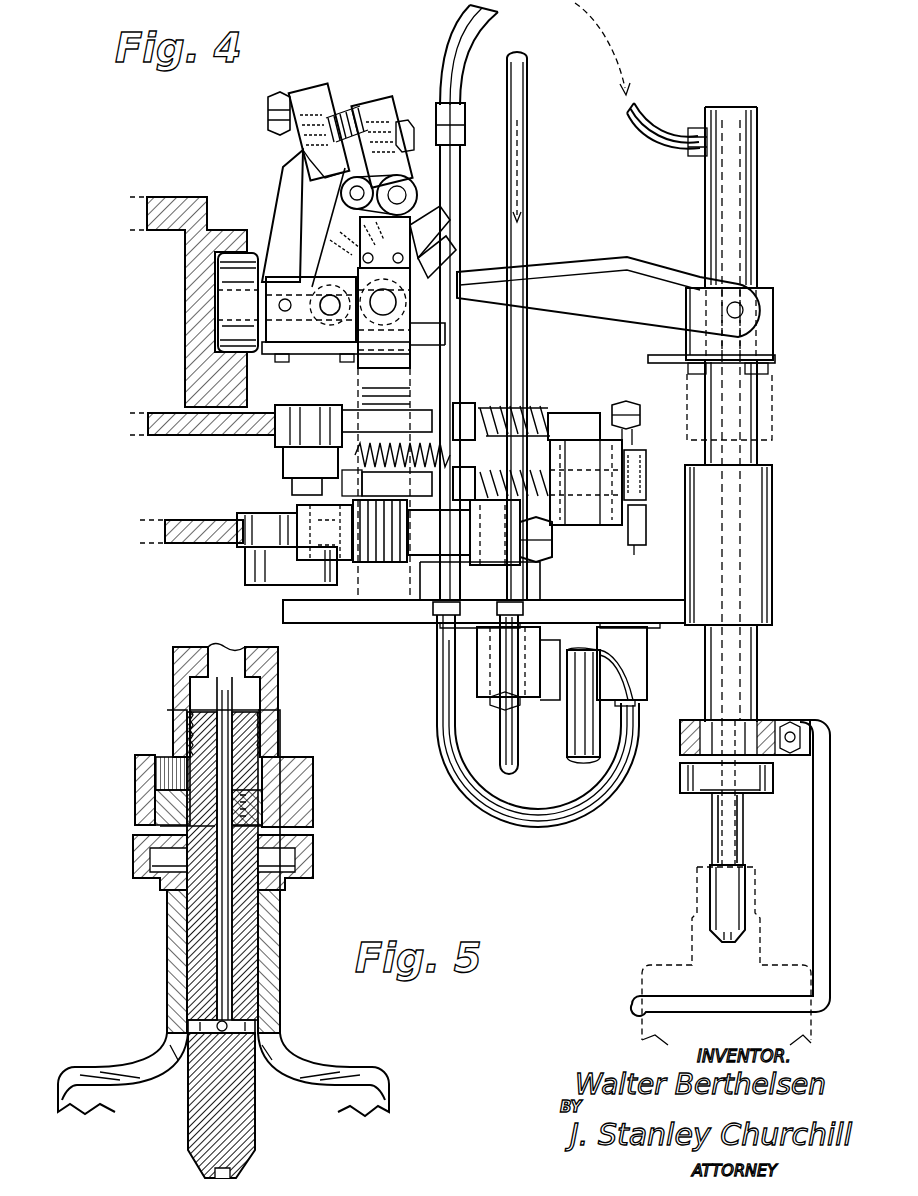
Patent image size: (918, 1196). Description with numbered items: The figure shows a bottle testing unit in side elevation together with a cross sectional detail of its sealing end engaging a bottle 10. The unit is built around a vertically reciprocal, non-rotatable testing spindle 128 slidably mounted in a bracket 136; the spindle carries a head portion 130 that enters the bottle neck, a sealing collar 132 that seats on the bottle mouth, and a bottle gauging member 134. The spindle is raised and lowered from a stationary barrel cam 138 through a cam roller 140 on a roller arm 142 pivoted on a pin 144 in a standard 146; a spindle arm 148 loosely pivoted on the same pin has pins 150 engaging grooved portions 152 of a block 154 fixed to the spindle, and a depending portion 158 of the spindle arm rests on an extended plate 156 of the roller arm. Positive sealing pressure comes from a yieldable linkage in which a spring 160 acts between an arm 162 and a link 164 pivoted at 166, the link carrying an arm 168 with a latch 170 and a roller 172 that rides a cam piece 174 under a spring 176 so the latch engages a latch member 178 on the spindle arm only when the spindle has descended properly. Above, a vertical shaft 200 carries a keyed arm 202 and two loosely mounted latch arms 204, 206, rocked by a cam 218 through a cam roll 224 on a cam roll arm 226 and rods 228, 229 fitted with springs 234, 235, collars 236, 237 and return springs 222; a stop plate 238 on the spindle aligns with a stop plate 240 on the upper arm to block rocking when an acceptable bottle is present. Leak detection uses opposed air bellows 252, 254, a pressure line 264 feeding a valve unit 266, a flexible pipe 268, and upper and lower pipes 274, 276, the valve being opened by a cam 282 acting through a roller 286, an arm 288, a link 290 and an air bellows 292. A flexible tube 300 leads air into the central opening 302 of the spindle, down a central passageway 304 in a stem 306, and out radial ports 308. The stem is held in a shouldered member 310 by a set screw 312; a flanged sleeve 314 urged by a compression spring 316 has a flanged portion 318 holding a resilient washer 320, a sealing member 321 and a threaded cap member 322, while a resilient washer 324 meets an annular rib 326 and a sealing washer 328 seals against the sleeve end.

In FIG. 5, the workpiece 10 is at (362, 1070).
In FIG. 4, the testing spindle 128 is at (758, 213).
In FIG. 5, the testing spindle 128 is at (172, 664).
In FIG. 4, the head portion 130 is at (712, 896).
In FIG. 5, the head portion 130 is at (256, 1103).
In FIG. 4, the sealing collar 132 is at (760, 793).
In FIG. 5, the sealing collar 132 is at (330, 864).
In FIG. 4, the bottle gauging member 134 is at (668, 996).
In FIG. 5, the bottle gauging member 134 is at (135, 756).
In FIG. 4, the bracket 136 is at (773, 562).
In FIG. 4, the barrel cam 138 is at (195, 200).
In FIG. 4, the cam roller 140 is at (228, 300).
In FIG. 4, the roller arm 142 is at (264, 330).
In FIG. 4, the pin 144 is at (383, 312).
In FIG. 4, the standard 146 is at (358, 378).
In FIG. 4, the spindle arm 148 is at (600, 270).
In FIG. 4, the pins 150 is at (742, 304).
In FIG. 4, the grooved portions 152 is at (774, 300).
In FIG. 4, the block 154 is at (774, 345).
In FIG. 4, the extended plate 156 is at (446, 348).
In FIG. 4, the depending portion 158 is at (446, 326).
In FIG. 4, the spring 160 is at (342, 118).
In FIG. 4, the arm 162 is at (306, 95).
In FIG. 4, the link 164 is at (372, 106).
In FIG. 4, the pivot 166 is at (328, 310).
In FIG. 4, the arm 168 is at (352, 190).
In FIG. 4, the latch 170 is at (432, 218).
In FIG. 4, the roller 172 is at (410, 168).
In FIG. 4, the cam piece 174 is at (420, 240).
In FIG. 4, the spring 176 is at (352, 262).
In FIG. 4, the latch member 178 is at (440, 254).
In FIG. 4, the vertical shaft 200 is at (600, 745).
In FIG. 4, the arm 202 is at (625, 495).
In FIG. 4, the upper latch arm 204 is at (624, 470).
In FIG. 4, the lower latch arm 206 is at (654, 530).
In FIG. 4, the cam 218 is at (240, 433).
In FIG. 4, the spring 222 is at (390, 468).
In FIG. 4, the cam roll 224 is at (280, 440).
In FIG. 4, the cam roll arm 226 is at (286, 470).
In FIG. 4, the rod 228 is at (396, 437).
In FIG. 4, the rod 229 is at (397, 484).
In FIG. 4, the spring 234 is at (518, 408).
In FIG. 4, the spring 235 is at (560, 413).
In FIG. 4, the collar 236 is at (460, 403).
In FIG. 4, the collar 237 is at (472, 470).
In FIG. 4, the stop plate 238 is at (692, 355).
In FIG. 4, the stop plate 240 is at (630, 414).
In FIG. 4, the air bellows 252 is at (565, 700).
In FIG. 4, the air bellows 254 is at (640, 665).
In FIG. 4, the pressure line 264 is at (528, 115).
In FIG. 4, the valve unit 266 is at (425, 572).
In FIG. 4, the flexible pipe 268 is at (518, 768).
In FIG. 4, the upper pipe 274 is at (458, 168).
In FIG. 4, the lower pipe 276 is at (437, 727).
In FIG. 4, the cam 282 is at (208, 532).
In FIG. 4, the roller 286 is at (237, 545).
In FIG. 4, the arm 288 is at (248, 575).
In FIG. 4, the link 290 is at (330, 540).
In FIG. 4, the air bellows 292 is at (370, 562).
In FIG. 4, the flexible tube 300 is at (440, 33).
In FIG. 4, the central opening 302 is at (742, 170).
In FIG. 5, the central passageway 304 is at (225, 967).
In FIG. 5, the stem 306 is at (195, 938).
In FIG. 5, the radial ports 308 is at (232, 1025).
In FIG. 5, the shouldered member 310 is at (280, 758).
In FIG. 5, the set screw 312 is at (172, 757).
In FIG. 5, the flanged sleeve 314 is at (265, 912).
In FIG. 5, the compression spring 316 is at (262, 808).
In FIG. 5, the flanged portion 318 is at (262, 830).
In FIG. 5, the resilient washer 320 is at (300, 852).
In FIG. 5, the sealing member 321 is at (310, 878).
In FIG. 5, the threaded cap member 322 is at (133, 862).
In FIG. 5, the resilient washer 324 is at (165, 805).
In FIG. 5, the annular rib 326 is at (160, 826).
In FIG. 5, the sealing washer 328 is at (190, 1026).